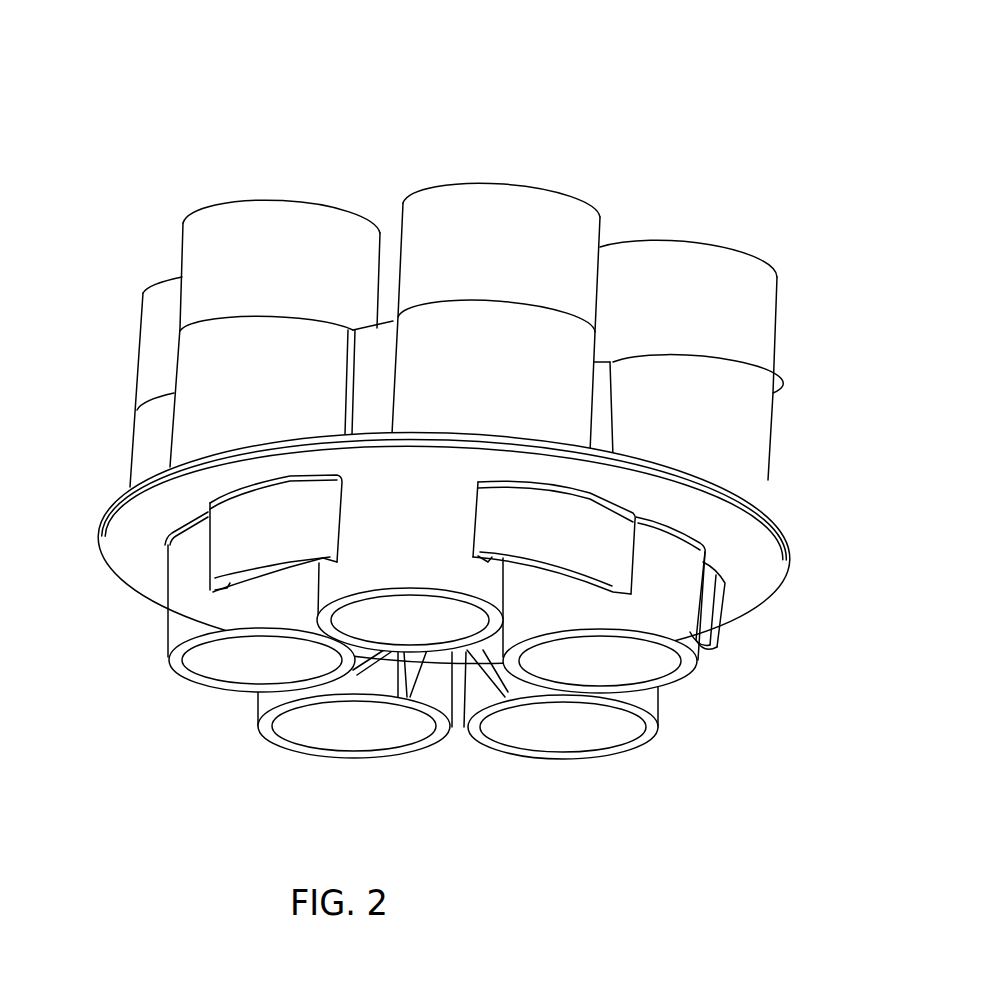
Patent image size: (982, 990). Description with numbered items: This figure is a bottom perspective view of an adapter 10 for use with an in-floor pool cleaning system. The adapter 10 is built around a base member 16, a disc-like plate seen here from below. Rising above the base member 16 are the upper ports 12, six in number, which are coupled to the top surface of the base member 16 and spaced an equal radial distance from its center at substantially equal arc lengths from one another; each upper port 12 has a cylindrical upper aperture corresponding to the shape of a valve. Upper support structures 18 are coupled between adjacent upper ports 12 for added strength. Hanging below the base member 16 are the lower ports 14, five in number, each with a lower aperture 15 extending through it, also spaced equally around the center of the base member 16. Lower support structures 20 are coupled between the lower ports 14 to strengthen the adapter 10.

The adapter 10 is at (458, 451).
The upper port 12 is at (482, 240).
The lower port 14 is at (663, 593).
The lower aperture 15 is at (558, 722).
The base member 16 is at (753, 578).
The upper support structure 18 is at (371, 390).
The lower support structure 20 is at (252, 522).